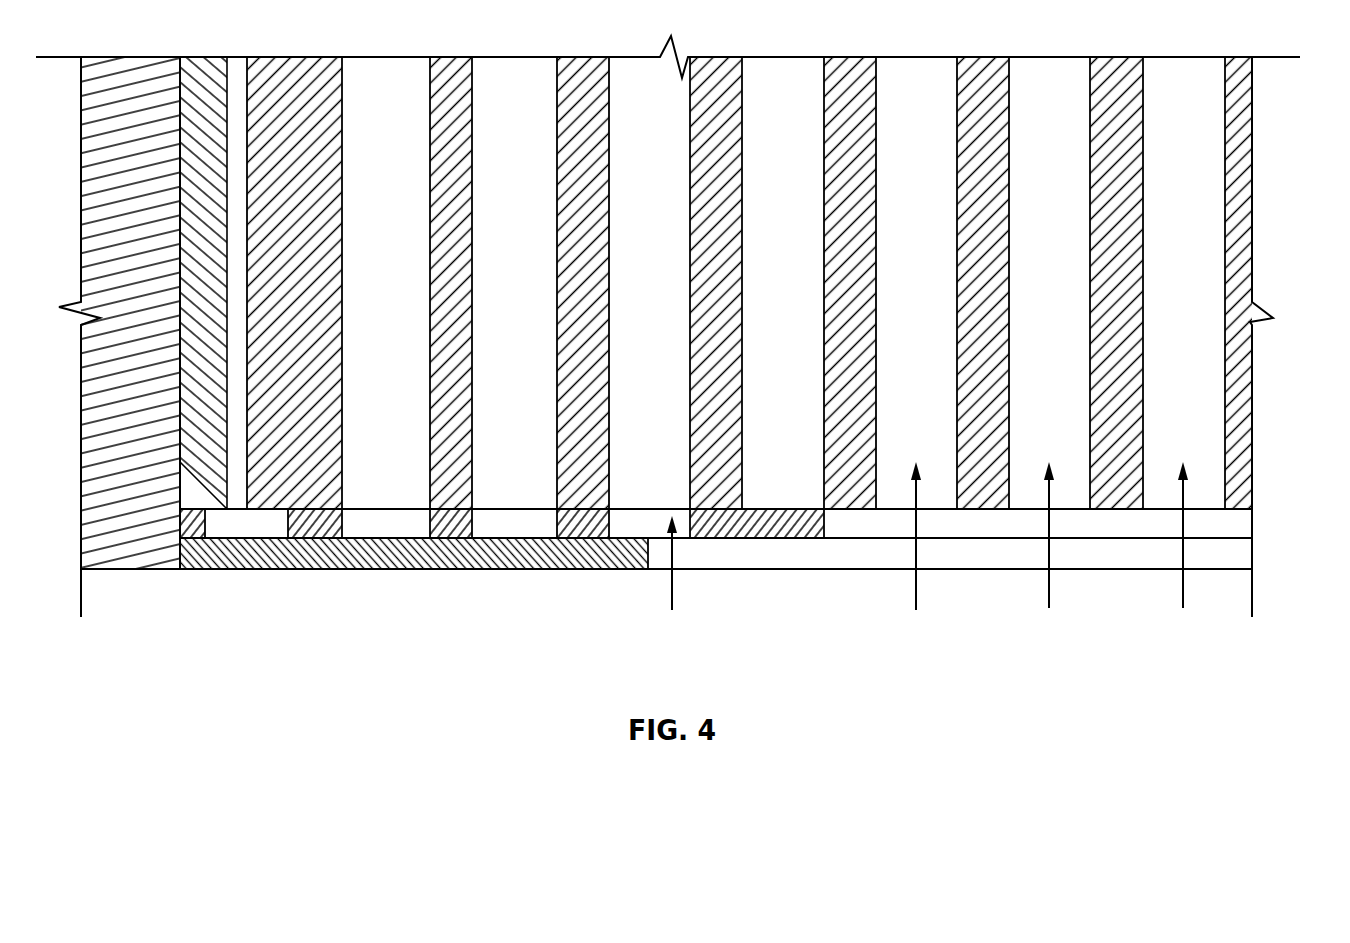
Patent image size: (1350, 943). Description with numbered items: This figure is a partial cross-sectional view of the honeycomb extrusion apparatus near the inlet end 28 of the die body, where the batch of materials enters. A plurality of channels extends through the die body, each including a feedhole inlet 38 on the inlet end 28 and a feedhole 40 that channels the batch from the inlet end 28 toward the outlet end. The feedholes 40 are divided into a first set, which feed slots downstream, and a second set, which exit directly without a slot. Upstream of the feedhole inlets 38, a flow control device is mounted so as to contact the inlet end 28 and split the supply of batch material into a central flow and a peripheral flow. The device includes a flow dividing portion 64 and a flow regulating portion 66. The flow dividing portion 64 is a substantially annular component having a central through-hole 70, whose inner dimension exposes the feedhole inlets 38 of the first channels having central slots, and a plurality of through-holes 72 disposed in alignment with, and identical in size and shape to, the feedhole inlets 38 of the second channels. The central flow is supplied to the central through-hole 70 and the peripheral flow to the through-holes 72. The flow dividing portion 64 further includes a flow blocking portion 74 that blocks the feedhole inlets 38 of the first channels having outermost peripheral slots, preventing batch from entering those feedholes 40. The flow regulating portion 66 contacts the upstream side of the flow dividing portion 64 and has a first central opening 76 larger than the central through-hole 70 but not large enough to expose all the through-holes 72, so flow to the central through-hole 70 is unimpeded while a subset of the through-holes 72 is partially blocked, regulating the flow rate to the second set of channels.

The inlet end 28 is at (1219, 639).
The feedhole inlet 38 is at (371, 490).
The feedhole 40 is at (950, 249).
The flow dividing portion 64 is at (1268, 524).
The flow regulating portion 66 is at (1268, 555).
The central through-hole 70 is at (960, 536).
The through-holes 72 is at (498, 536).
The flow blocking portion 74 is at (745, 542).
The first central opening 76 is at (1110, 566).